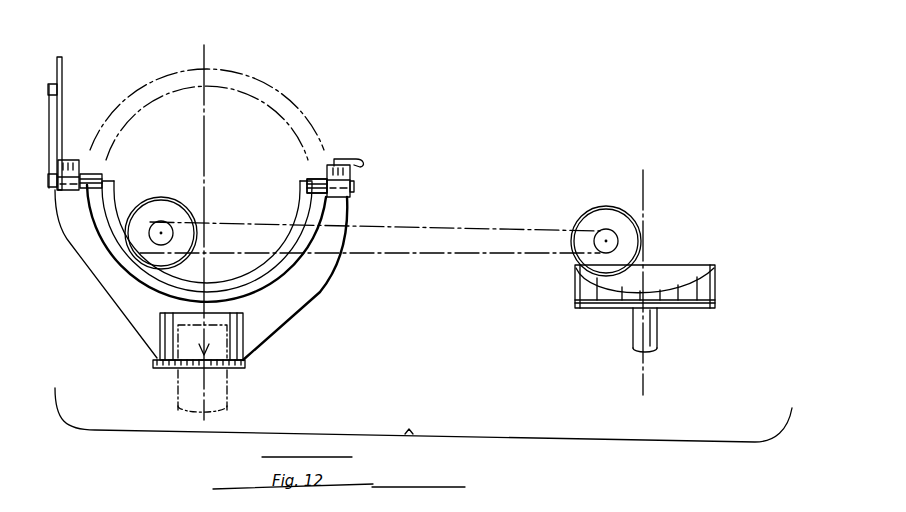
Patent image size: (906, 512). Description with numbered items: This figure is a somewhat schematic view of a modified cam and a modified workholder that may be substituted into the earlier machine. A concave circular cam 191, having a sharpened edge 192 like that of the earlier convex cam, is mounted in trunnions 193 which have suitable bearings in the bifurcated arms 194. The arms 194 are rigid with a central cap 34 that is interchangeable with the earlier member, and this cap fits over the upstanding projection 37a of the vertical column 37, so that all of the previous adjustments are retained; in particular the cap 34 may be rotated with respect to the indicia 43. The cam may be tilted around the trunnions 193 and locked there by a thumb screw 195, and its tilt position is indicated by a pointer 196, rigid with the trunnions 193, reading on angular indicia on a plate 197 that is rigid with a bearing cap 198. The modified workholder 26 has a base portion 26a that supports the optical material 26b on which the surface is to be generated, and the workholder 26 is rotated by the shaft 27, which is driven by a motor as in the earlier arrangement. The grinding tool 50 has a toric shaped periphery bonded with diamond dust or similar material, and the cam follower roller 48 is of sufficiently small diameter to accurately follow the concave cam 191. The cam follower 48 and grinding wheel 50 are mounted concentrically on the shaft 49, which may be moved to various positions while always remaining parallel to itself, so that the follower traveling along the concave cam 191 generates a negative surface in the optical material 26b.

The pointer 196 is at (48, 88).
The plate 197 is at (62, 68).
The bearing cap 198 is at (70, 160).
The trunnions 193 is at (95, 176).
The thumb screw 195 is at (351, 160).
The sharpened edge 192 is at (307, 190).
The concave circular cam 191 is at (308, 215).
The bifurcated arms 194 is at (345, 204).
The cam follower roller 48 is at (158, 200).
The shaft 49 is at (488, 228).
The grinding tool 50 is at (603, 211).
The workholder 26 is at (689, 250).
The optical material 26b is at (714, 280).
The base portion 26a is at (715, 303).
The shaft 27 is at (657, 330).
The central cap 34 is at (238, 333).
The upstanding projection 37a is at (227, 343).
The indicia 43 is at (153, 364).
The vertical column 37 is at (227, 388).